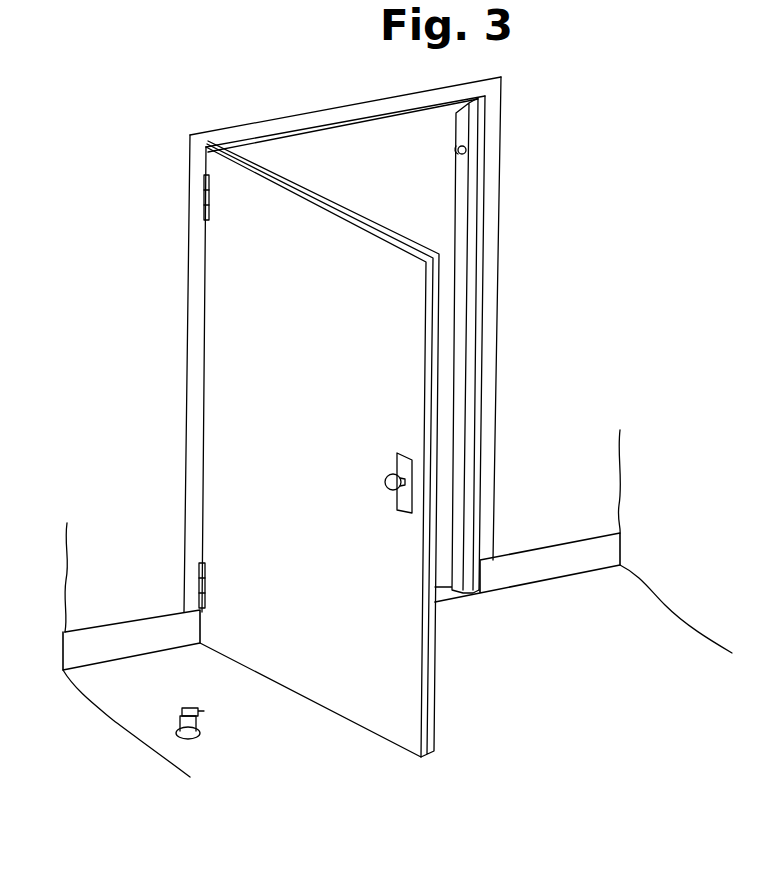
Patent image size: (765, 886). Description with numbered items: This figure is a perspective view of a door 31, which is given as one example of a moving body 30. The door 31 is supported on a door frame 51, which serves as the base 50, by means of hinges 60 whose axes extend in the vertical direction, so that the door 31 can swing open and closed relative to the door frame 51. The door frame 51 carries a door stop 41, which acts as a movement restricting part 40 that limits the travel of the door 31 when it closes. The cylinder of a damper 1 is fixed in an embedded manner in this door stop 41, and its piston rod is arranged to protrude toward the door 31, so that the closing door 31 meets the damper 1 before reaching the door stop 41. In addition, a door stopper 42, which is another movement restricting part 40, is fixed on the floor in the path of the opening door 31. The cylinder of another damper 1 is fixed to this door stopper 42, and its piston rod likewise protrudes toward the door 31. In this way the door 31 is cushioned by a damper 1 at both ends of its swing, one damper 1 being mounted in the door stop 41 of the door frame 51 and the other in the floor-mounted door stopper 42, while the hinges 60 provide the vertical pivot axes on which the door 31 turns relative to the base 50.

The damper 1 is at (473, 152).
The moving body 30 is at (250, 449).
The door 31 is at (250, 317).
The movement restricting part 40 is at (408, 449).
The door stop 41 is at (468, 328).
The door stopper 42 is at (200, 738).
The base 50 is at (342, 326).
The door frame 51 is at (272, 122).
The hinge 60 is at (205, 195).